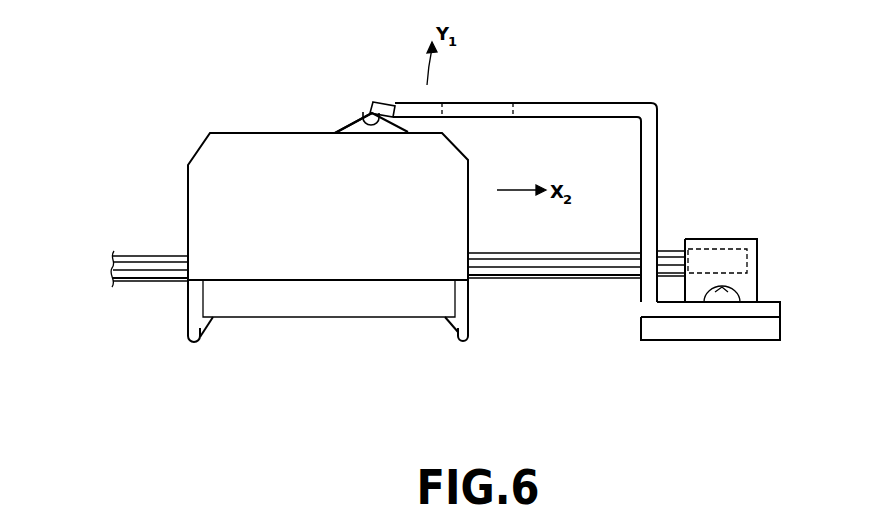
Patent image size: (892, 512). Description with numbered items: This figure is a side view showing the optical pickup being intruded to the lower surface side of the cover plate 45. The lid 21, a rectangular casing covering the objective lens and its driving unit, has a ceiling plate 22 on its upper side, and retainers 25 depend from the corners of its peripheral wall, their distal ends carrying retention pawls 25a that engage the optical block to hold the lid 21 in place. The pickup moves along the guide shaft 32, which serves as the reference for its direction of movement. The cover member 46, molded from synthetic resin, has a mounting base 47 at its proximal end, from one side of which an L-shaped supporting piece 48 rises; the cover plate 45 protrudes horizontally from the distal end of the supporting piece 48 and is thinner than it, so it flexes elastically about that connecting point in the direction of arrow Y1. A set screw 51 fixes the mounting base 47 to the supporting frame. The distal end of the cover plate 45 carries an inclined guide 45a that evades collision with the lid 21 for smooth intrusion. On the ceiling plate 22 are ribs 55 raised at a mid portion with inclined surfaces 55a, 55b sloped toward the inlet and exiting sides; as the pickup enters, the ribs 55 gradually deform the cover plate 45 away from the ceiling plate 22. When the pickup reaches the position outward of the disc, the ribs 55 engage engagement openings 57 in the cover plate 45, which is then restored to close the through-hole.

The lid 21 is at (207, 163).
The ceiling plate 22 is at (238, 133).
The retainers 25 is at (188, 317).
The retention pawls 25a is at (200, 333).
The guide shaft 32 is at (135, 257).
The cover plate 45 is at (557, 110).
The inclined guide 45a is at (363, 112).
The cover member 46 is at (653, 105).
The mounting base 47 is at (777, 308).
The supporting piece 48 is at (650, 173).
The set screw 51 is at (740, 298).
The ribs 55 is at (357, 122).
The inclined surface 55a is at (338, 130).
The inclined surface 55b is at (393, 100).
The engagement openings 57 is at (513, 117).